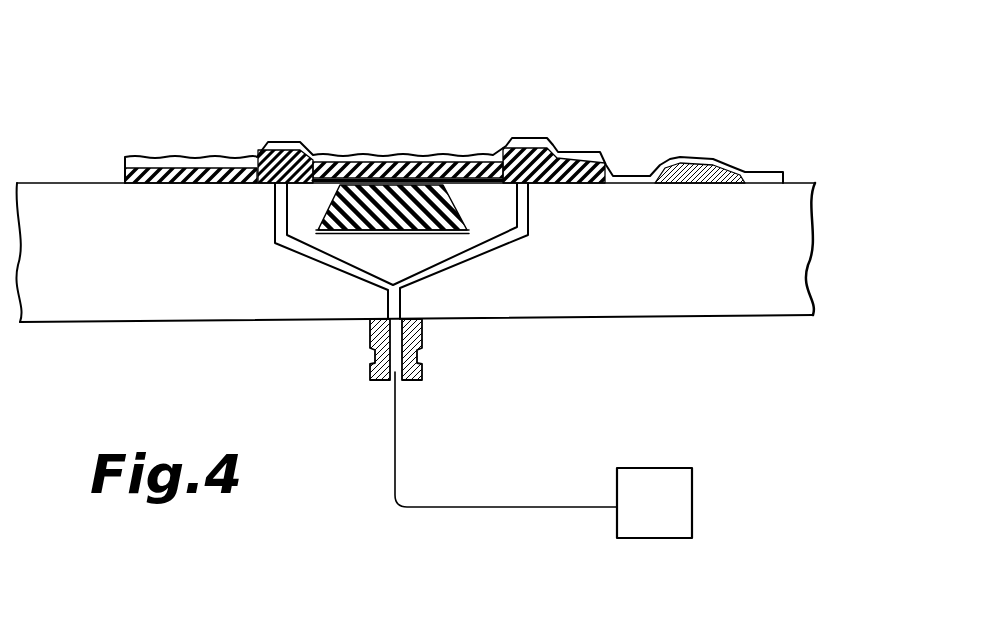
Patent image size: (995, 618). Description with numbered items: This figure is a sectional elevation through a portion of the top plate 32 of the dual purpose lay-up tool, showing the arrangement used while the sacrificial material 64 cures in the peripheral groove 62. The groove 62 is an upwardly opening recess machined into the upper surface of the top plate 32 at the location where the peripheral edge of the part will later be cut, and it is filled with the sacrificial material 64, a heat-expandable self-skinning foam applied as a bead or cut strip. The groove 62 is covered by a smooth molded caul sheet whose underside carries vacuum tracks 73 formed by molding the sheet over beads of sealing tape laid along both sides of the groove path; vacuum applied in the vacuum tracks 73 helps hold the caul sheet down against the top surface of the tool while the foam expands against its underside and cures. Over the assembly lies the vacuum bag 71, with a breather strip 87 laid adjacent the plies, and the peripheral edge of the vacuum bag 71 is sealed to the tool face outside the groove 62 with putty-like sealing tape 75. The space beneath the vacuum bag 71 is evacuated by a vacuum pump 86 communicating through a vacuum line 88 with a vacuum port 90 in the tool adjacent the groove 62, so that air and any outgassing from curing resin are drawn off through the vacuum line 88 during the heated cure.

The top plate 32 is at (65, 207).
The vacuum bag 71 is at (165, 157).
The vacuum tracks 73 is at (265, 143).
The breather strip 87 is at (508, 172).
The sealing tape 75 is at (680, 157).
The peripheral groove 62 is at (448, 218).
The sacrificial material 64 is at (372, 204).
The vacuum port 90 is at (422, 368).
The vacuum pump 86 is at (655, 483).
The vacuum line 88 is at (497, 507).